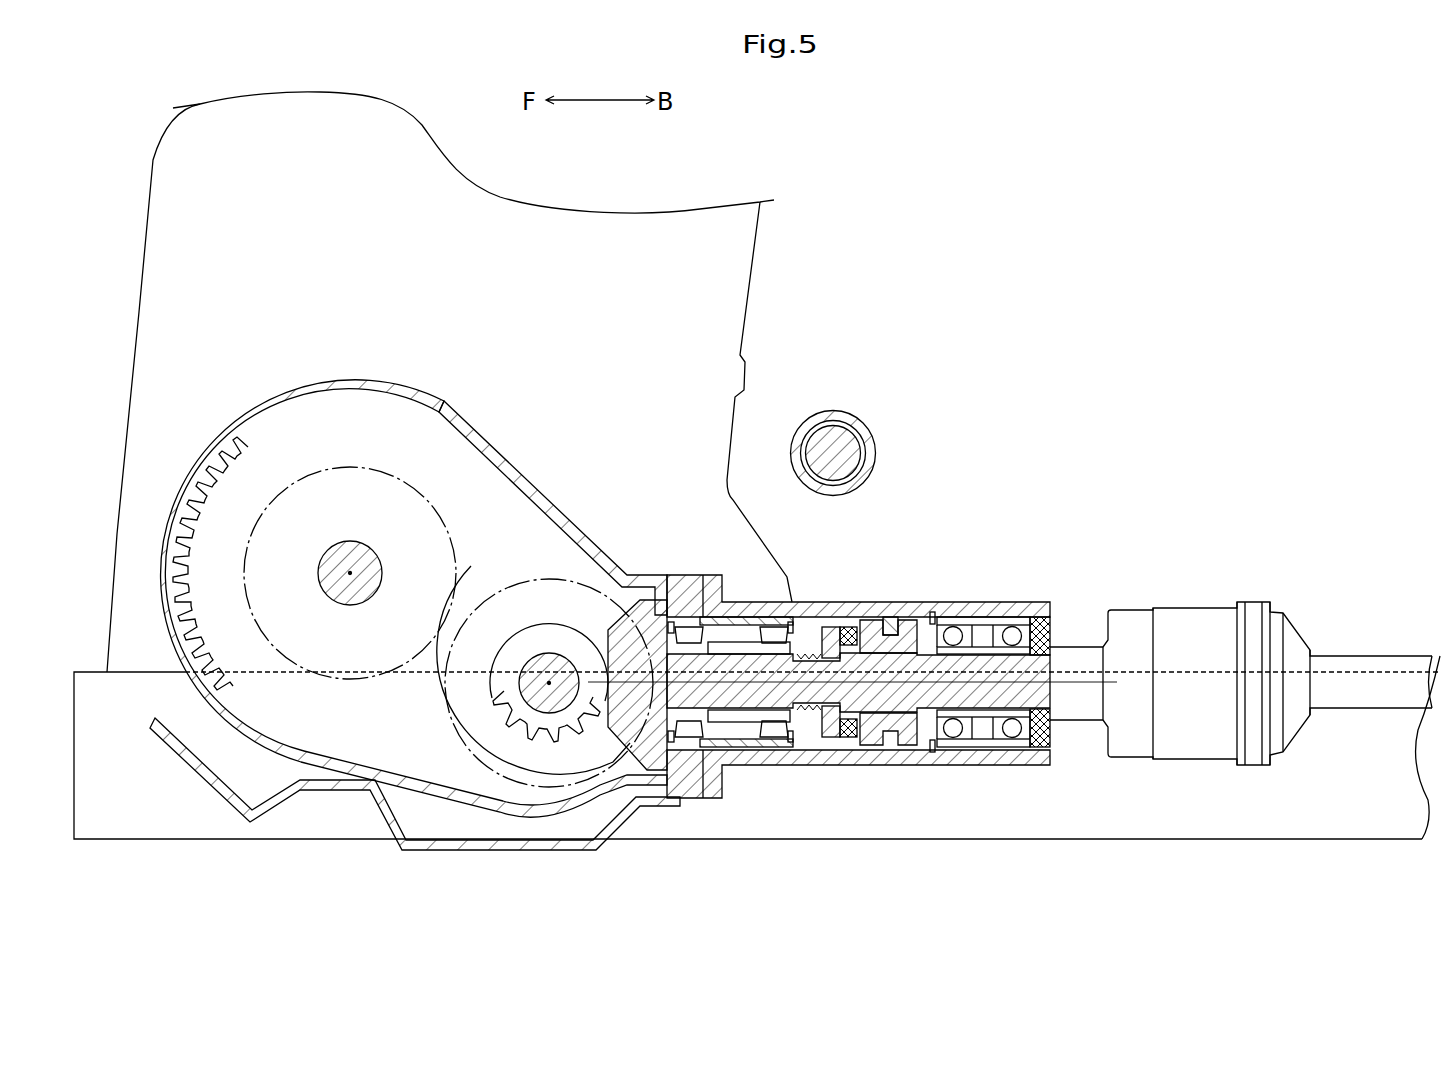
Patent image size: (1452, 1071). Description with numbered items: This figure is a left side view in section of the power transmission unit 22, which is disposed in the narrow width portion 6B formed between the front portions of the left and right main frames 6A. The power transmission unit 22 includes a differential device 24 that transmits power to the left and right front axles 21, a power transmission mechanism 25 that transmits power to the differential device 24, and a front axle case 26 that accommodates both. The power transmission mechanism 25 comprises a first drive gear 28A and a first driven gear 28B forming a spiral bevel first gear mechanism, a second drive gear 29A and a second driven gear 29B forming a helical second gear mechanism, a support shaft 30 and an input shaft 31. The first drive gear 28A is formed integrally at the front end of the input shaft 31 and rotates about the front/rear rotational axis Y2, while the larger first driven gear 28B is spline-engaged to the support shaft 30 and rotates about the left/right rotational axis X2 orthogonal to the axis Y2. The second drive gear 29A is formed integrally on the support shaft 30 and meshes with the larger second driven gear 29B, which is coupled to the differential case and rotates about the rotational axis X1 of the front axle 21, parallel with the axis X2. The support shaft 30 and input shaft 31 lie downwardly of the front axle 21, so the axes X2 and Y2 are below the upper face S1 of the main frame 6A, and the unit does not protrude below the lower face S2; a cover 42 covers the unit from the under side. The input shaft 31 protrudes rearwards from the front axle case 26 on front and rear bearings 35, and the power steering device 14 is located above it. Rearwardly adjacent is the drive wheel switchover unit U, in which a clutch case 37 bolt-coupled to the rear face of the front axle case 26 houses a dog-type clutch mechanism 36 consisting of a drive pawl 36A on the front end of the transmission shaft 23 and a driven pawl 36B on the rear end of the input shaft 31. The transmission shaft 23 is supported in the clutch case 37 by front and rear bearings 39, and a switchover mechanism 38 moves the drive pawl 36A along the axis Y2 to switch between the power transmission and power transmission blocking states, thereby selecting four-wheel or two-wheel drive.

The main frame 6A is at (1170, 825).
The narrow width portion 6B is at (142, 780).
The power steering device 14 is at (837, 413).
The front axle 21 is at (362, 548).
The power transmission unit 22 is at (414, 523).
The transmission shaft 23 is at (1050, 633).
The differential device 24 is at (307, 505).
The power transmission mechanism 25 is at (405, 613).
The front axle case 26 is at (482, 438).
The first drive gear 28A is at (643, 605).
The first driven gear 28B is at (545, 760).
The second drive gear 29A is at (521, 583).
The second driven gear 29B is at (287, 488).
The support shaft 30 is at (485, 736).
The input shaft 31 is at (733, 705).
The bearings 35 is at (763, 630).
The clutch mechanism 36 is at (866, 775).
The drive pawl 36A is at (867, 743).
The driven pawl 36B is at (835, 740).
The clutch case 37 is at (927, 768).
The switchover mechanism 38 is at (892, 612).
The bearings 39 is at (1010, 622).
The cover 42 is at (272, 808).
The drive wheel switchover unit U is at (922, 722).
The upper face S1 is at (142, 650).
The lower face S2 is at (205, 843).
The rotational axis X1 is at (350, 573).
The rotational axis X2 is at (549, 683).
The rotational axis Y2 is at (1082, 685).